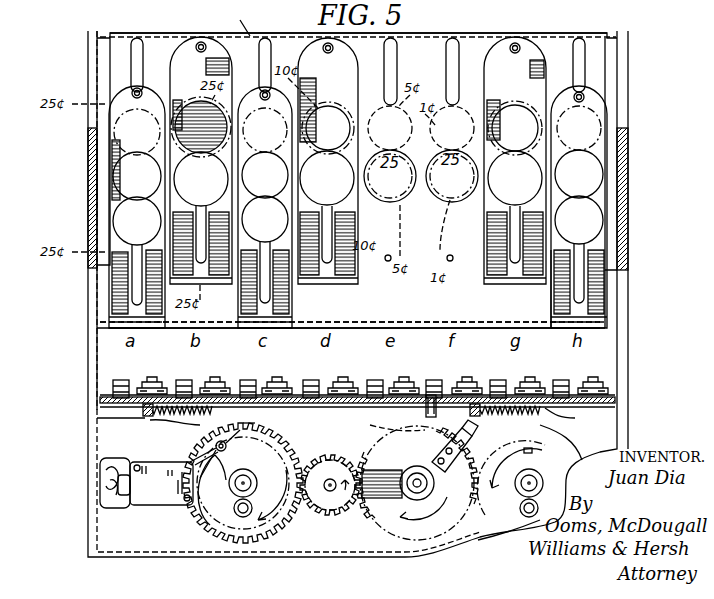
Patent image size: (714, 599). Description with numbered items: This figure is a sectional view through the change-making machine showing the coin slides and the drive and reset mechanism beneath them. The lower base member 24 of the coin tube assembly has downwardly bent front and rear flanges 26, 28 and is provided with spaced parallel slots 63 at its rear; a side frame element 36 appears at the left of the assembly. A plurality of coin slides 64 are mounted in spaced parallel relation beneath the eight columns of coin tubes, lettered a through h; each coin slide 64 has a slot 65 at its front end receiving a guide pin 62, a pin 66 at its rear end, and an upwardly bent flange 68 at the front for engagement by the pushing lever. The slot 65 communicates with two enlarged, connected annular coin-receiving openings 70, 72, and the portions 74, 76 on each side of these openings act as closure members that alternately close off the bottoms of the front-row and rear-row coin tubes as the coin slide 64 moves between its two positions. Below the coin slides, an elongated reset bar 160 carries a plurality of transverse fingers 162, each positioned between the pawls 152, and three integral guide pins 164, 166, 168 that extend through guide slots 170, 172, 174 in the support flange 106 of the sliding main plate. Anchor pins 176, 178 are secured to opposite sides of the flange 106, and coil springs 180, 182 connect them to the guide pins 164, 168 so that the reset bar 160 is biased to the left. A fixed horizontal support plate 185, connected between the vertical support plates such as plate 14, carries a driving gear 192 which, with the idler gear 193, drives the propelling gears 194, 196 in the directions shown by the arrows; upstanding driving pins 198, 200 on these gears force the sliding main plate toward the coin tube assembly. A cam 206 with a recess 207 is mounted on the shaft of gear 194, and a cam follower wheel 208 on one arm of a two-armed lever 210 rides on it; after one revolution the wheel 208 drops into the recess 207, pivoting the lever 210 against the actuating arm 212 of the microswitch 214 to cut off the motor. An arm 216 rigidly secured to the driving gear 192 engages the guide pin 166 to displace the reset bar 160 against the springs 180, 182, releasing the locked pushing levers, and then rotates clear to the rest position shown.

The support plate 14 is at (550, 102).
The lower base member 24 is at (460, 309).
The front flange 26 is at (482, 318).
The rear flange 28 is at (246, 34).
The side frame member 36 is at (96, 150).
The guide pin 62 is at (480, 262).
The slot 63 is at (136, 52).
The coin slide 64 is at (123, 300).
The slot 65 is at (135, 278).
The pin 66 is at (132, 92).
The flange 68 is at (115, 322).
The coin-receiving opening 70 is at (128, 228).
The coin-receiving opening 72 is at (126, 162).
The closure member 74 is at (118, 130).
The closure member 76 is at (357, 113).
The support flange 106 is at (365, 407).
The pawl 152 is at (180, 368).
The reset bar 160 is at (294, 395).
The finger 162 is at (118, 378).
The guide pin 164 is at (215, 422).
The guide pin 166 is at (430, 410).
The guide pin 168 is at (570, 418).
The guide slot 170 is at (255, 408).
The guide slot 172 is at (446, 411).
The guide slot 174 is at (580, 412).
The anchor pin 176 is at (145, 416).
The anchor pin 178 is at (511, 471).
The coil spring 180 is at (200, 425).
The coil spring 182 is at (570, 420).
The support plate 185 is at (333, 547).
The driving gear 192 is at (412, 463).
The idler gear 193 is at (342, 477).
The propelling gear 194 is at (285, 490).
The propelling gear 196 is at (560, 469).
The driving pin 198 is at (250, 510).
The driving pin 200 is at (520, 506).
The cam 206 is at (266, 430).
The recess 207 is at (197, 522).
The cam follower wheel 208 is at (230, 450).
The two-armed lever 210 is at (216, 444).
The actuating arm 212 is at (162, 466).
The microswitch 214 is at (172, 493).
The arm 216 is at (440, 444).